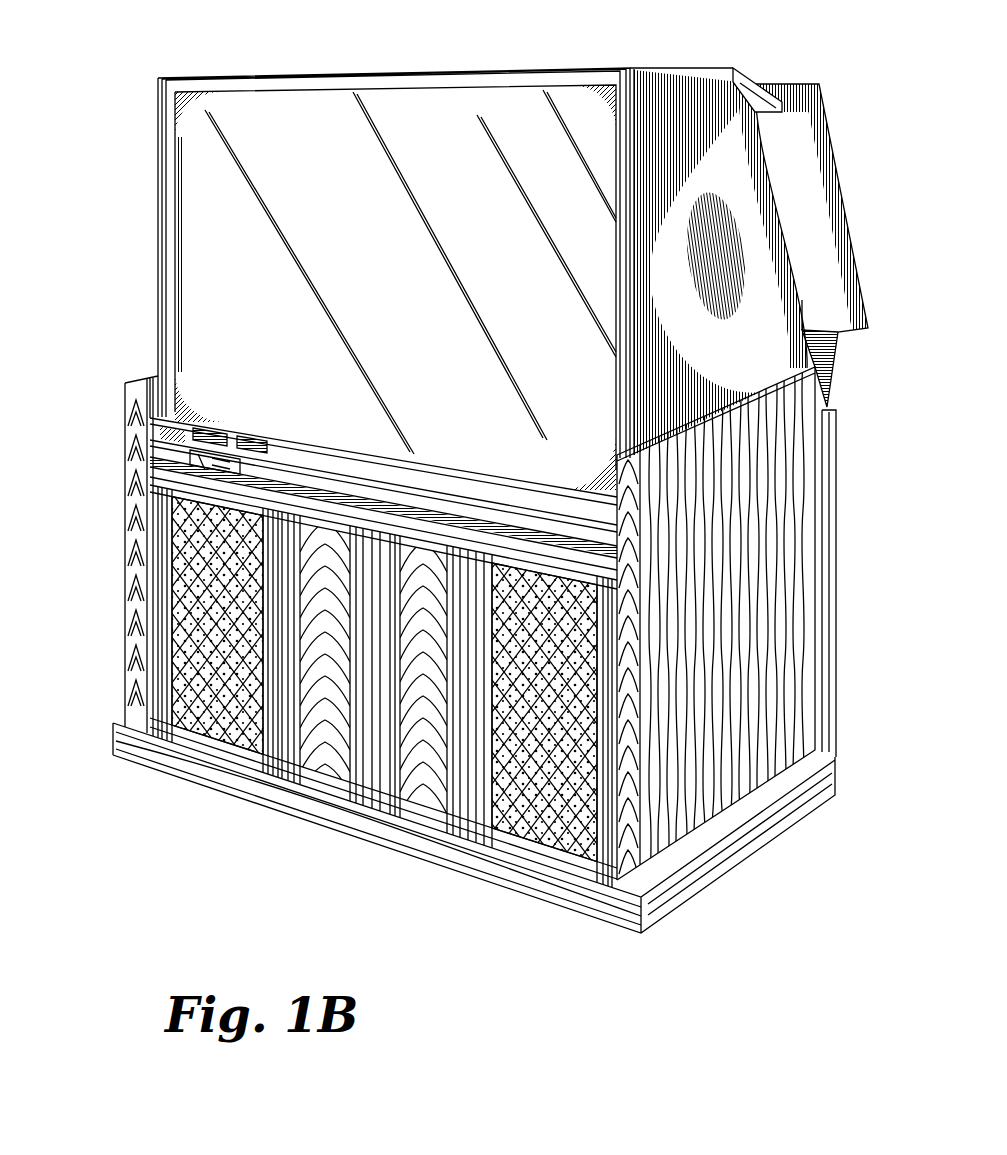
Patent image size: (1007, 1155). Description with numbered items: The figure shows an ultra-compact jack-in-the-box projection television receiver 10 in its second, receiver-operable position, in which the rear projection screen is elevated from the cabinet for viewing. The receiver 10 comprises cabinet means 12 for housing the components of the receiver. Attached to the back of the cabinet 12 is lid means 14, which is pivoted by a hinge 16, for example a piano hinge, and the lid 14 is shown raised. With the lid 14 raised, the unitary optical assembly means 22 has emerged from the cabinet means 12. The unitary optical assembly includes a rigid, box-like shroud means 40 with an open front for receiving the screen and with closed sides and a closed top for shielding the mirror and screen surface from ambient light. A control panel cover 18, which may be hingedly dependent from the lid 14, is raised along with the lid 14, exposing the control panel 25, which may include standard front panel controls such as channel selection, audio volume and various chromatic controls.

The projection television receiver 10 is at (145, 248).
The cabinet means 12 is at (127, 597).
The lid means 14 is at (832, 144).
The hinge 16 is at (842, 402).
The control panel cover 18 is at (740, 74).
The unitary optical assembly means 22 is at (150, 158).
The control panel 25 is at (150, 412).
The shroud means 40 is at (751, 219).